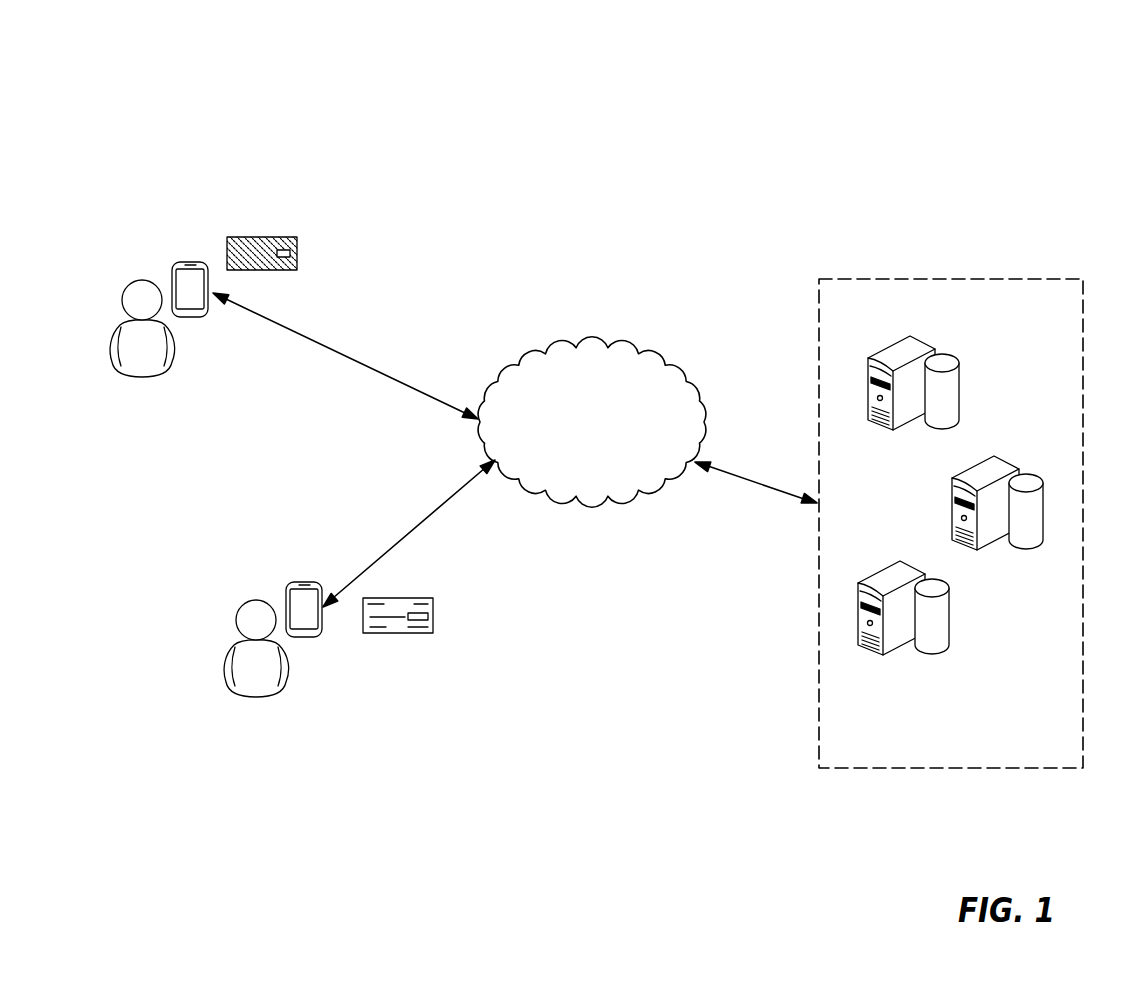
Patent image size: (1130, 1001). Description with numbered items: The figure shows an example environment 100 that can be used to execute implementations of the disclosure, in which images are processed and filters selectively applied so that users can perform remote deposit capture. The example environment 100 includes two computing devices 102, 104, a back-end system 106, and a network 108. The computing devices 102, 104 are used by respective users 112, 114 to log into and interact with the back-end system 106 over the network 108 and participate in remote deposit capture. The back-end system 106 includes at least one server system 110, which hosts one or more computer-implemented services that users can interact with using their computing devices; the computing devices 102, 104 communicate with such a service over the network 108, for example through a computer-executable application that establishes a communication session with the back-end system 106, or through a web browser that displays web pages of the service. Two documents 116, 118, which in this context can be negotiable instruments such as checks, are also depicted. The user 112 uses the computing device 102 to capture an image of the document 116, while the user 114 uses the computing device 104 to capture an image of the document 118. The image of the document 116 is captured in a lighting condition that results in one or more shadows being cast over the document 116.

The example environment 100 is at (444, 110).
The computing device 102 is at (183, 262).
The computing device 104 is at (296, 582).
The back-end system 106 is at (948, 279).
The network 108 is at (591, 347).
The server system 110 is at (960, 368).
The user 112 is at (140, 377).
The user 114 is at (254, 697).
The document 116 is at (264, 238).
The document 118 is at (398, 633).